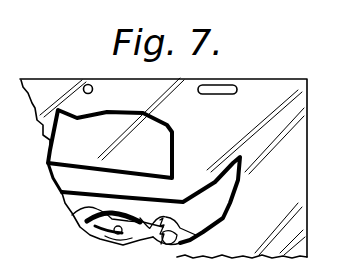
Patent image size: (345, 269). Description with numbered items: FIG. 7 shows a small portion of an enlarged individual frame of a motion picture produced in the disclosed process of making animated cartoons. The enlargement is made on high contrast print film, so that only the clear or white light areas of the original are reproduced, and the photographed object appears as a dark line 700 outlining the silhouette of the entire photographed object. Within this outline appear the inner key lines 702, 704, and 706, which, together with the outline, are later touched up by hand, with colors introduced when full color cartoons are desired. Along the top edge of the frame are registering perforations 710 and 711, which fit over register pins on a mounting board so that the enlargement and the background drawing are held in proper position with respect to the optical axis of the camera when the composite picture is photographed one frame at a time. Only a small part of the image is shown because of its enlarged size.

The dark line 700 is at (173, 131).
The inner key line 702 is at (80, 214).
The inner key line 704 is at (130, 247).
The inner key line 706 is at (198, 237).
The perforation 710 is at (220, 88).
The perforation 711 is at (88, 84).